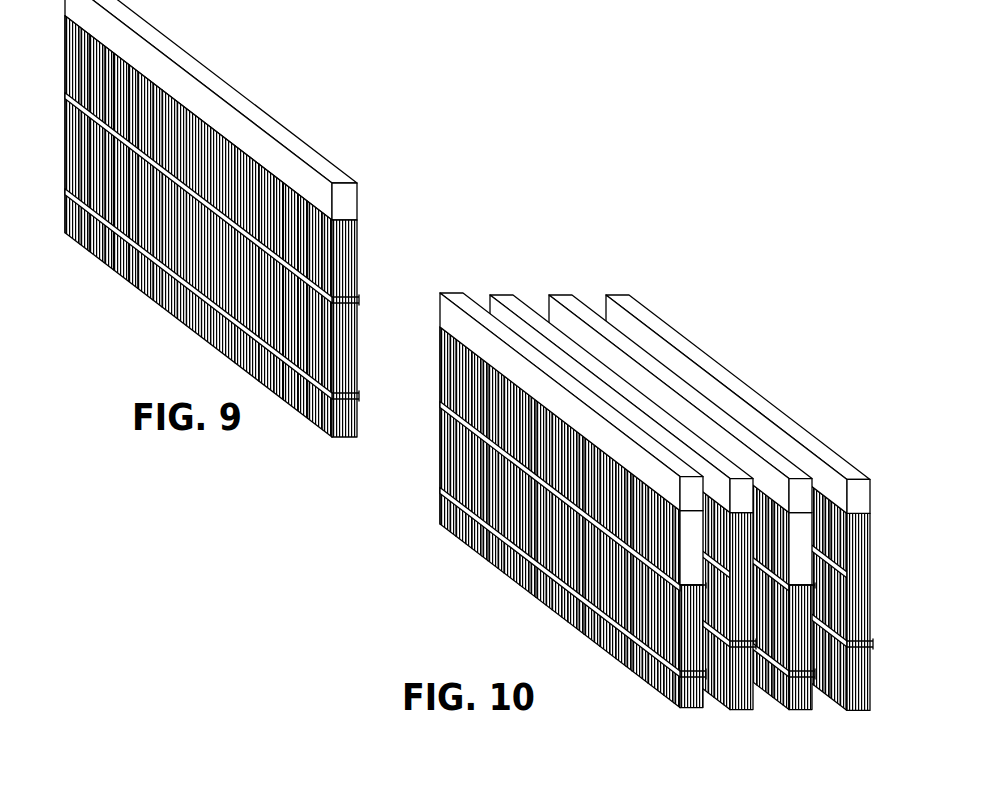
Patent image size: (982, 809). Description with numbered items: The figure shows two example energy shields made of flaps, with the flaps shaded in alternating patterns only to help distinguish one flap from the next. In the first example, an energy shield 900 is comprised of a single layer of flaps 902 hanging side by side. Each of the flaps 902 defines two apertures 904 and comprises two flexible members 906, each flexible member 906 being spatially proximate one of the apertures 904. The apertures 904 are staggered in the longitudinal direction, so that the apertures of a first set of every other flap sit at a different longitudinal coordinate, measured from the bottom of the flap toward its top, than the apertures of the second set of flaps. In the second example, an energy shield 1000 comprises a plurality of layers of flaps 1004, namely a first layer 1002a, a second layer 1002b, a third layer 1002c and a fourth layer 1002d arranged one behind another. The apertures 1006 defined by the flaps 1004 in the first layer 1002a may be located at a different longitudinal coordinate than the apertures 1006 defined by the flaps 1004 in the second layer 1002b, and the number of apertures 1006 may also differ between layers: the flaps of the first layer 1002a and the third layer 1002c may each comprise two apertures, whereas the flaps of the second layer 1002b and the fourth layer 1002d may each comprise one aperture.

In FIG. 9, the energy shield 900 is at (237, 218).
In FIG. 9, the flaps 902 is at (142, 293).
In FIG. 9, the apertures 904 is at (344, 297).
In FIG. 9, the flexible members 906 is at (361, 299).
In FIG. 10, the energy shield 1000 is at (617, 449).
In FIG. 10, the first layer 1002a is at (453, 293).
In FIG. 10, the second layer 1002b is at (503, 295).
In FIG. 10, the third layer 1002c is at (559, 295).
In FIG. 10, the fourth layer 1002d is at (617, 295).
In FIG. 10, the flaps 1004 is at (543, 598).
In FIG. 10, the apertures 1006 is at (446, 405).